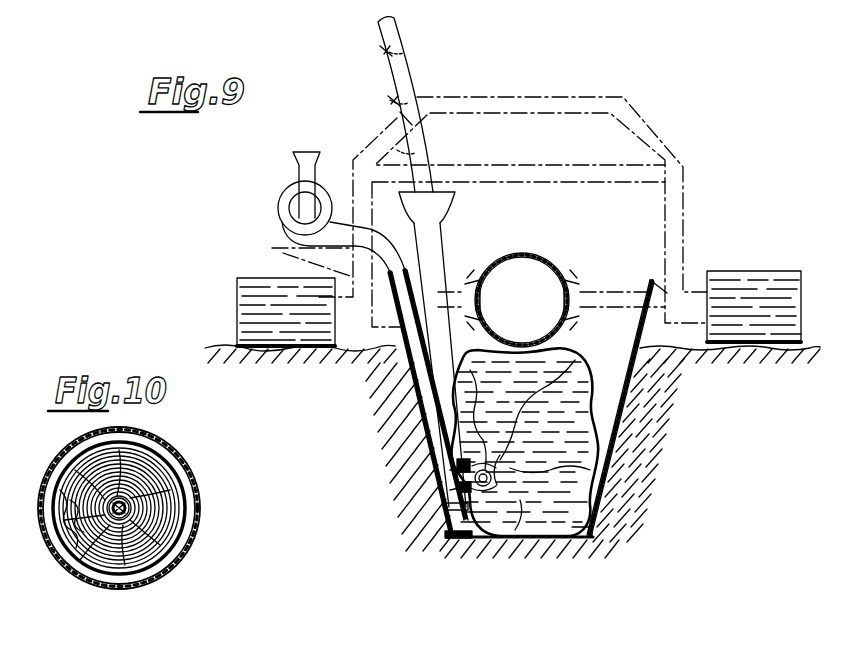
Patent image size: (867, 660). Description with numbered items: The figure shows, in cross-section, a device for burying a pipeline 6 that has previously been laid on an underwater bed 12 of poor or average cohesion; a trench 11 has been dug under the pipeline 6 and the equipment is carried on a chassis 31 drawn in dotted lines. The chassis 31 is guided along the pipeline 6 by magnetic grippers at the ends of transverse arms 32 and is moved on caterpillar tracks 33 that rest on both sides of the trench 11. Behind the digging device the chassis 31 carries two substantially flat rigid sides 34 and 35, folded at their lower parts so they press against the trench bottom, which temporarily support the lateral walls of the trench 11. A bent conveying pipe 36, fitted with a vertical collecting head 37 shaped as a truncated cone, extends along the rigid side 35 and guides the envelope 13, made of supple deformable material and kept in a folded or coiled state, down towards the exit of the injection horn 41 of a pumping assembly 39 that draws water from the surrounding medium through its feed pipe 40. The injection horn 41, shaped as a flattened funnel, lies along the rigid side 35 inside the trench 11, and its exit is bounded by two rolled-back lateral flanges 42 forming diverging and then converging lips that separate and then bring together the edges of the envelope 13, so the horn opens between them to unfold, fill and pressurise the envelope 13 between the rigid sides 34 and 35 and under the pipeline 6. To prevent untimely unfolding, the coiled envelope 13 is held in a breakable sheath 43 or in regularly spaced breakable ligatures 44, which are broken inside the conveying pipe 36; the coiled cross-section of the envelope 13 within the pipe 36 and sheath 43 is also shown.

In FIG. 9, the pipeline 6 is at (520, 252).
In FIG. 9, the trench 11 is at (610, 380).
In FIG. 9, the underwater bed 12 is at (512, 369).
In FIG. 9, the envelope 13 is at (590, 361).
In FIG. 10, the envelope 13 is at (170, 538).
In FIG. 9, the chassis 31 is at (576, 98).
In FIG. 9, the transverse arms 32 is at (604, 292).
In FIG. 9, the caterpillar tracks 33 is at (753, 272).
In FIG. 9, the rigid side 34 is at (620, 427).
In FIG. 9, the rigid side 35 is at (413, 440).
In FIG. 9, the conveying pipe 36 is at (427, 263).
In FIG. 10, the conveying pipe 36 is at (188, 464).
In FIG. 9, the collecting head 37 is at (438, 197).
In FIG. 9, the pumping assembly 39 is at (278, 209).
In FIG. 9, the feed pipe 40 is at (298, 163).
In FIG. 9, the injection horn 41 is at (420, 363).
In FIG. 9, the lateral flanges 42 is at (437, 491).
In FIG. 9, the breakable sheath 43 is at (422, 131).
In FIG. 10, the breakable sheath 43 is at (135, 510).
In FIG. 9, the breakable ligatures 44 is at (392, 96).